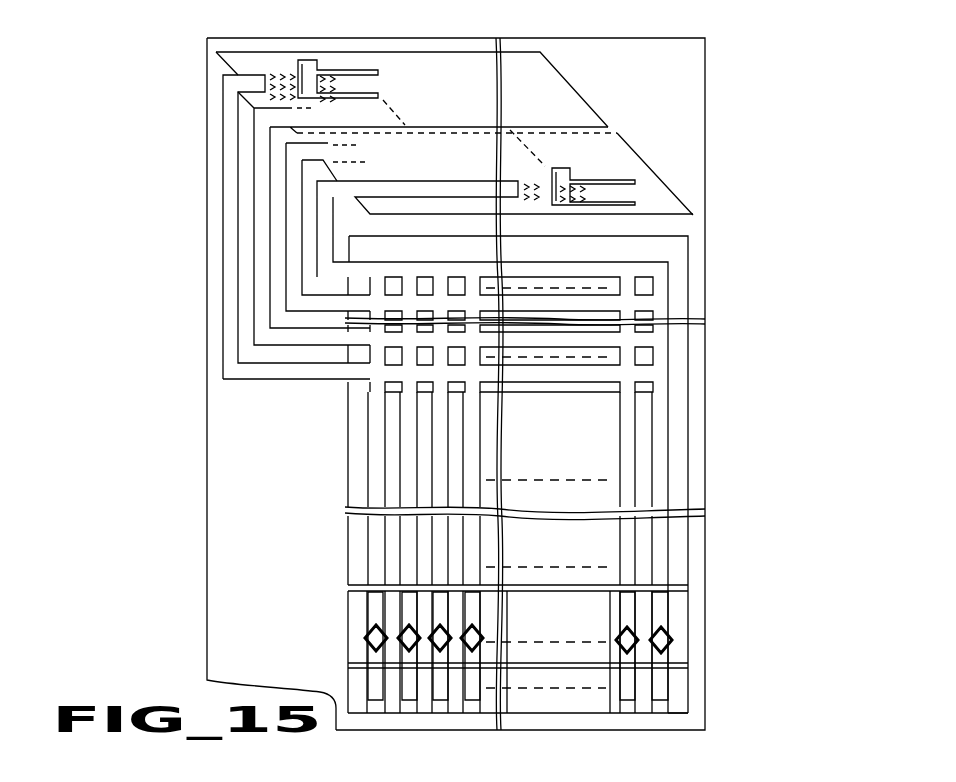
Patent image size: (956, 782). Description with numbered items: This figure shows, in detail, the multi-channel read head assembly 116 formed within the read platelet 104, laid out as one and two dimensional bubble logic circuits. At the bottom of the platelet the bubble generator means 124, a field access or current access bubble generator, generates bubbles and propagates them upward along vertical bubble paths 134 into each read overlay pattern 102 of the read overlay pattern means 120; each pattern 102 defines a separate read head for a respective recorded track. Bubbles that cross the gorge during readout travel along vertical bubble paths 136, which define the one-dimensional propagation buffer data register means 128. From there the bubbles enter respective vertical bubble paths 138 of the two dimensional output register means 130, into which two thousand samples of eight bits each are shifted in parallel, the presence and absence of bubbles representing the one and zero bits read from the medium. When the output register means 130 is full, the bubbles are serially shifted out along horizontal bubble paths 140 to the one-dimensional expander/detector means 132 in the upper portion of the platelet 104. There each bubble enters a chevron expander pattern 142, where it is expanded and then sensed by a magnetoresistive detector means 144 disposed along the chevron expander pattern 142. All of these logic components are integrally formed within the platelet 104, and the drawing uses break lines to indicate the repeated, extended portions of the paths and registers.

The read overlay pattern 102 is at (402, 633).
The read platelet 104 is at (718, 161).
The multi-channel read head assembly 116 is at (731, 352).
The read overlay pattern means 120 is at (699, 638).
The bubble generator means 124 is at (699, 692).
The buffer data register means 128 is at (705, 458).
The output register means 130 is at (705, 295).
The expander/detector means 132 is at (443, 62).
The vertical bubble paths 134 is at (440, 688).
The vertical bubble paths 136 is at (440, 556).
The vertical bubble paths 138 is at (438, 357).
The horizontal bubble paths 140 is at (582, 306).
The chevron expander pattern 142 is at (277, 75).
The magnetoresistive detector means 144 is at (315, 82).